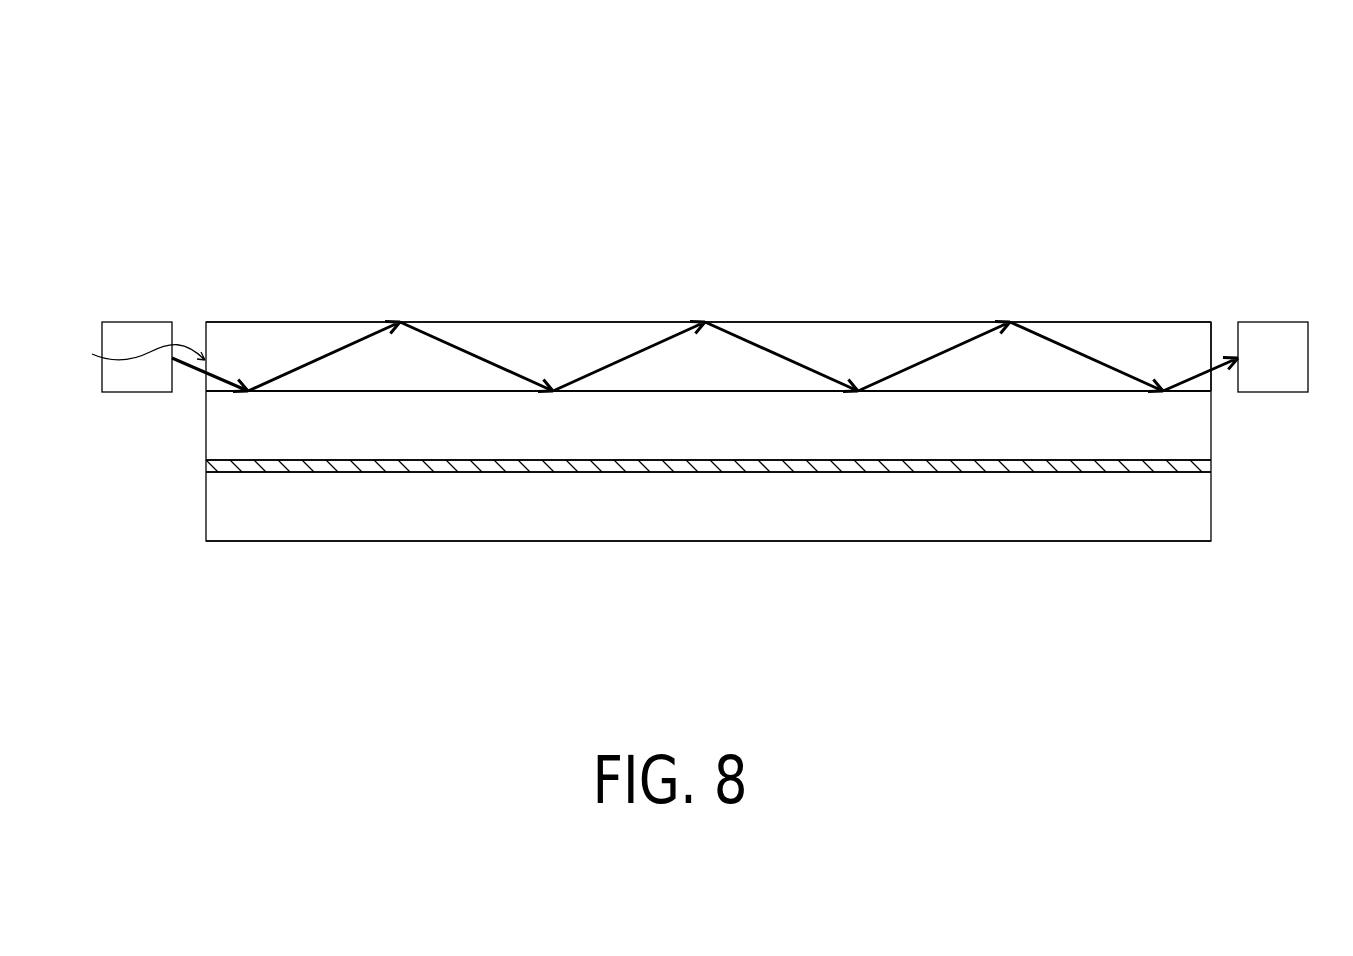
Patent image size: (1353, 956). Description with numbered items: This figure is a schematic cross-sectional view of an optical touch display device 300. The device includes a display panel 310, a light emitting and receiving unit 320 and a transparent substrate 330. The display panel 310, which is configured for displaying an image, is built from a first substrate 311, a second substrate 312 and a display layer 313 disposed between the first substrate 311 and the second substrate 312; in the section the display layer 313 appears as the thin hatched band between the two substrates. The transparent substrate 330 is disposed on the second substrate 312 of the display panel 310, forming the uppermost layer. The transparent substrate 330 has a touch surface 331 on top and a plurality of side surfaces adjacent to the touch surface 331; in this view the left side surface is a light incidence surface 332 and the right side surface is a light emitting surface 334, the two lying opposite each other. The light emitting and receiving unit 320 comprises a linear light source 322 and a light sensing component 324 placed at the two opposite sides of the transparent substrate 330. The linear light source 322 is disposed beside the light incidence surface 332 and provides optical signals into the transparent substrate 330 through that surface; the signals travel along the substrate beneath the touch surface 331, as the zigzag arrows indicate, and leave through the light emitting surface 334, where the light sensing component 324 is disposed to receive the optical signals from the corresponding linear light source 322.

The optical touch display device 300 is at (1300, 617).
The display panel 310 is at (708, 528).
The first substrate 311 is at (915, 617).
The second substrate 312 is at (945, 437).
The display layer 313 is at (1080, 467).
The light emitting and receiving unit 320 is at (705, 216).
The linear light source 322 is at (140, 340).
The light sensing component 324 is at (1275, 340).
The transparent substrate 330 is at (1145, 362).
The touch surface 331 is at (383, 317).
The light incidence surface 332 is at (123, 353).
The light emitting surface 334 is at (1222, 336).